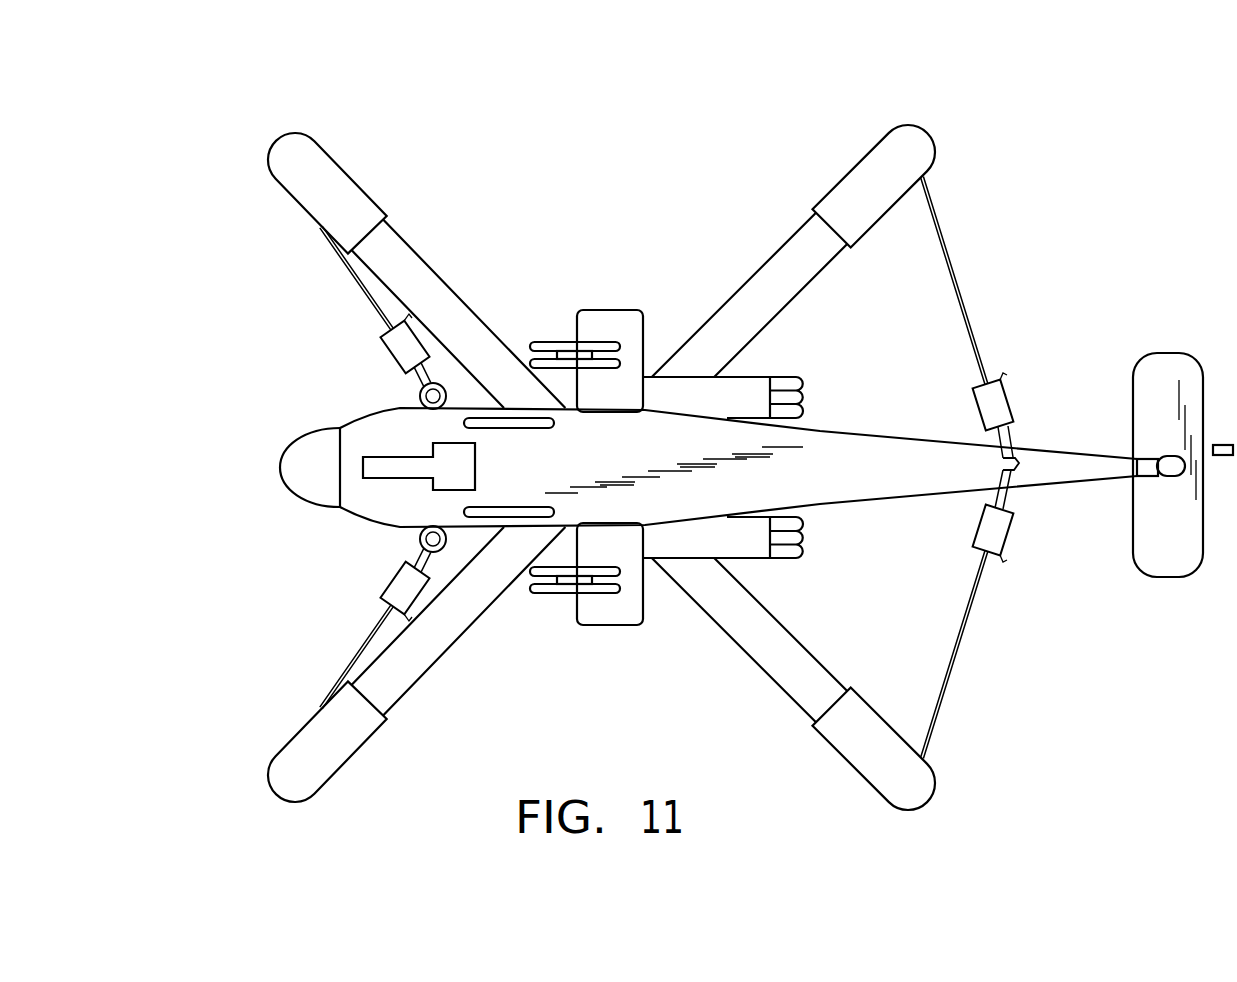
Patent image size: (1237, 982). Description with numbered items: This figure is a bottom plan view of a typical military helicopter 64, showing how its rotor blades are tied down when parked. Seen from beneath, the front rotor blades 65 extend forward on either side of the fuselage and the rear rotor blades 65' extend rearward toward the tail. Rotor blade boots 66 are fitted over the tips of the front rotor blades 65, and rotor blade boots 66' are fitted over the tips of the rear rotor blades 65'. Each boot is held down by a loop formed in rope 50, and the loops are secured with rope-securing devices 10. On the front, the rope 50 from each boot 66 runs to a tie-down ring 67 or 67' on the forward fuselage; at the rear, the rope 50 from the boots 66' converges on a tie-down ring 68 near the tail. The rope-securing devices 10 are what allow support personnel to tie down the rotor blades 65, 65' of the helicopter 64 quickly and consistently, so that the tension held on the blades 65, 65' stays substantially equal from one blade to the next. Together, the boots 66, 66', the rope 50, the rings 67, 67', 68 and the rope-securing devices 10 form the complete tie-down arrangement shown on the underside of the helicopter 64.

The rope-securing device 10 is at (370, 342).
The rope 50 is at (345, 275).
The helicopter 64 is at (547, 178).
The front rotor blade 65 is at (459, 464).
The rear rotor blade 65' is at (749, 456).
The rotor blade boot 66 is at (282, 446).
The rotor blade boot 66' is at (914, 449).
The tie-down ring 67 is at (393, 396).
The tie-down ring 67' is at (387, 545).
The tie-down ring 68 is at (998, 466).